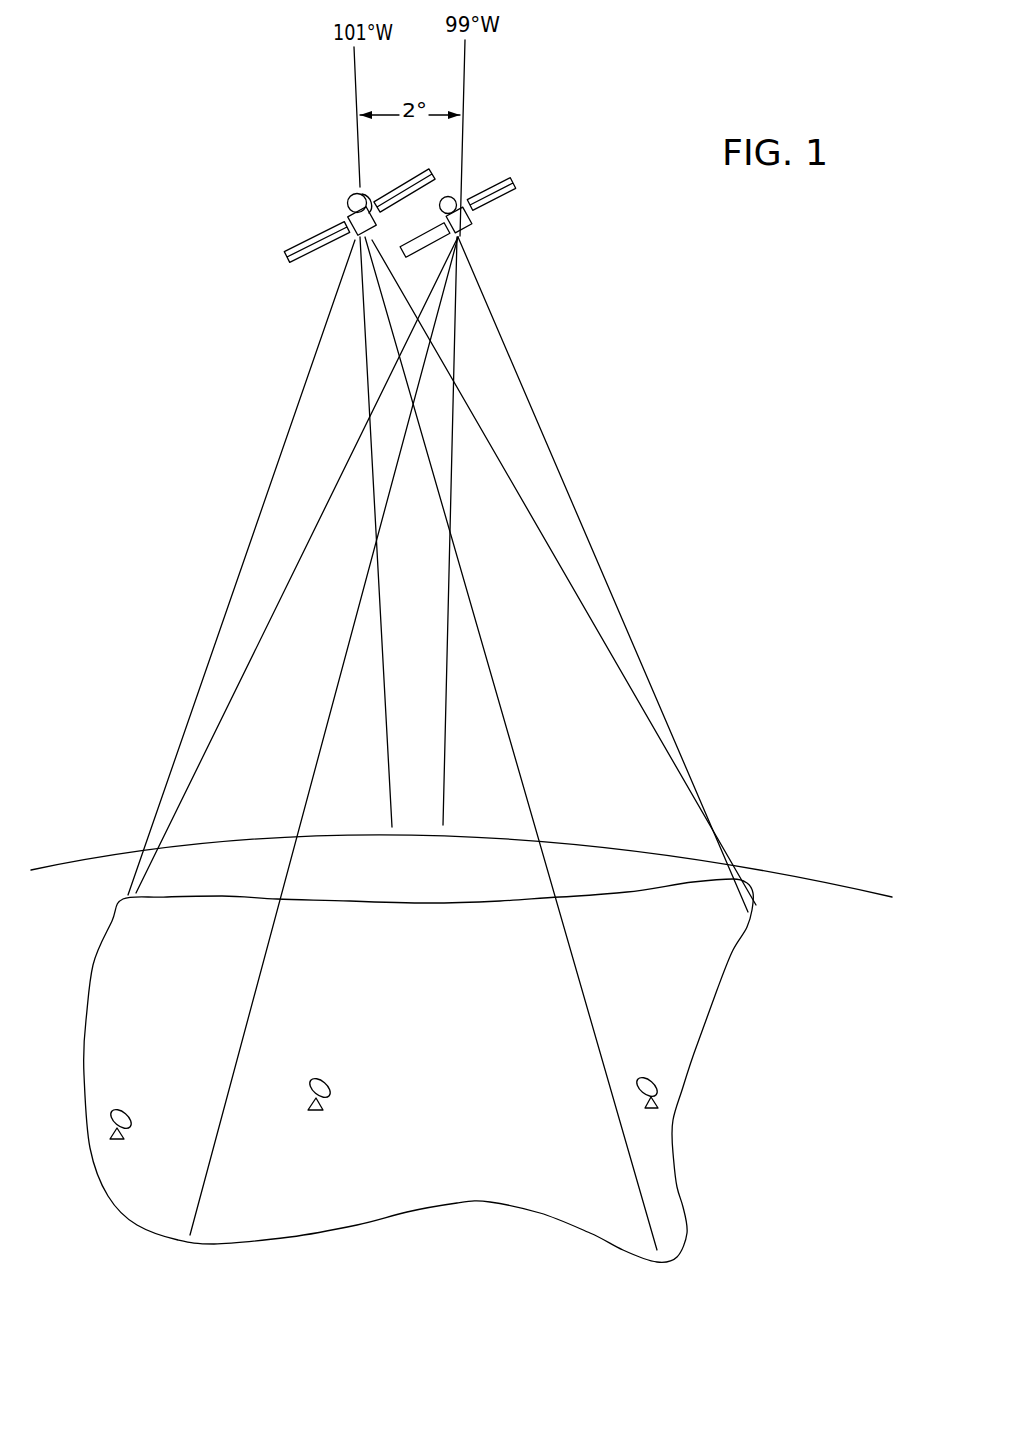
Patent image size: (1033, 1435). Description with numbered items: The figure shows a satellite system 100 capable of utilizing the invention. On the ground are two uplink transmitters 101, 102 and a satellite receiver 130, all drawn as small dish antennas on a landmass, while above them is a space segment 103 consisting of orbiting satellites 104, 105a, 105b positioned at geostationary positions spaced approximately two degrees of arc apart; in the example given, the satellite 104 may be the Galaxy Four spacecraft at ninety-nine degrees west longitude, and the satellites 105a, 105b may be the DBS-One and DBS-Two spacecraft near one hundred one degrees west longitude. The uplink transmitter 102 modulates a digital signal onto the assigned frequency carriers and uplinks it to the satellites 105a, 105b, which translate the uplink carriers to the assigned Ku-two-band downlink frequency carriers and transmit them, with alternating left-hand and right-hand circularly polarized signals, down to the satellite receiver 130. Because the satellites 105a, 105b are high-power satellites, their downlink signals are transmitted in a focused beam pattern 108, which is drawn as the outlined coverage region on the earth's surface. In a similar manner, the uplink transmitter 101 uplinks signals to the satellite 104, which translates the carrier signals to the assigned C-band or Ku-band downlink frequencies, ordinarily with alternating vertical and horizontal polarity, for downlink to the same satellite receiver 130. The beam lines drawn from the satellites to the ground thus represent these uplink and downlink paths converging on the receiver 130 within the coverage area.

The satellite system 100 is at (200, 611).
The ground-based uplink transmitter 101 is at (652, 1075).
The ground-based uplink transmitter 102 is at (333, 1100).
The space segment 103 is at (307, 216).
The satellite 104 is at (475, 196).
The satellite 105a is at (348, 200).
The satellite 105b is at (371, 192).
The focused beam pattern 108 is at (712, 947).
The ground-based satellite receiver 130 is at (131, 1126).